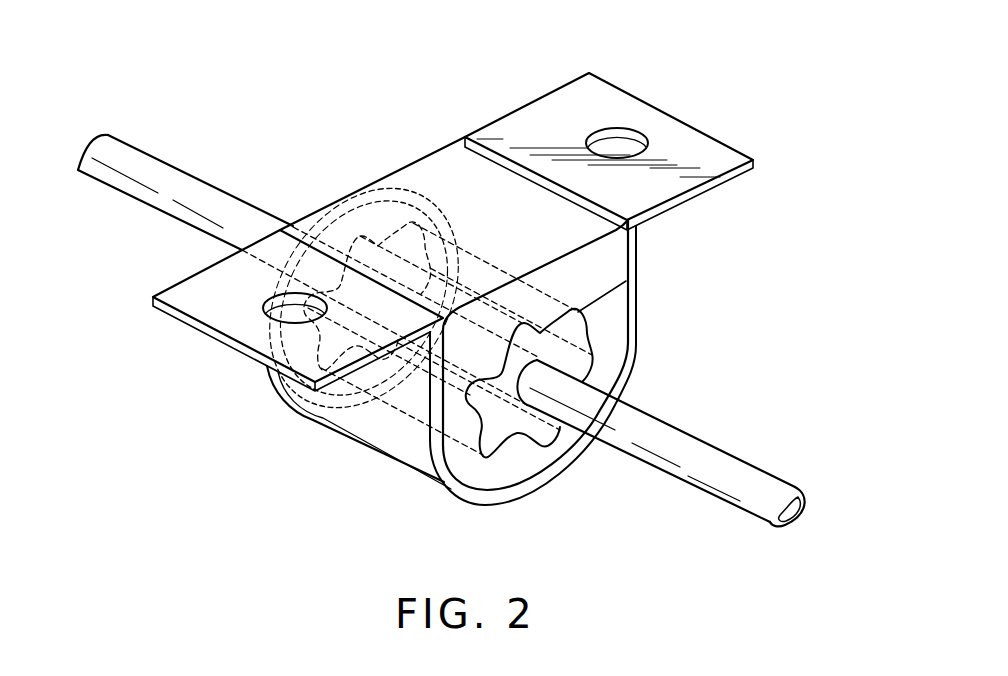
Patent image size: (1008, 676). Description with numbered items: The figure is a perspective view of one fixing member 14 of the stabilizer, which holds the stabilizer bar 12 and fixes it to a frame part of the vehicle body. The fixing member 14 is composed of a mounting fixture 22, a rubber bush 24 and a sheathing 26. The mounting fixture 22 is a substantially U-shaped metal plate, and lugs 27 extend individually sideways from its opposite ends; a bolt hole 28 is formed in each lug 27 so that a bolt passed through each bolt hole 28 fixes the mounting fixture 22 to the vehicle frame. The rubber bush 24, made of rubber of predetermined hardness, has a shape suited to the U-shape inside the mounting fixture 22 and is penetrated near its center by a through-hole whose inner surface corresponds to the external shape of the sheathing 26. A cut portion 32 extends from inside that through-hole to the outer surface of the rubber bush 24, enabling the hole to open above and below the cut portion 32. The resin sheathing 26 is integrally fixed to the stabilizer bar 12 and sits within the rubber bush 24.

The stabilizer bar 12 is at (720, 458).
The fixing member 14 is at (305, 114).
The mounting fixture 22 is at (723, 152).
The rubber bush 24 is at (620, 325).
The sheathing 26 is at (503, 432).
The lug 27 is at (607, 90).
The bolt hole 28 is at (622, 145).
The cut portion 32 is at (613, 291).